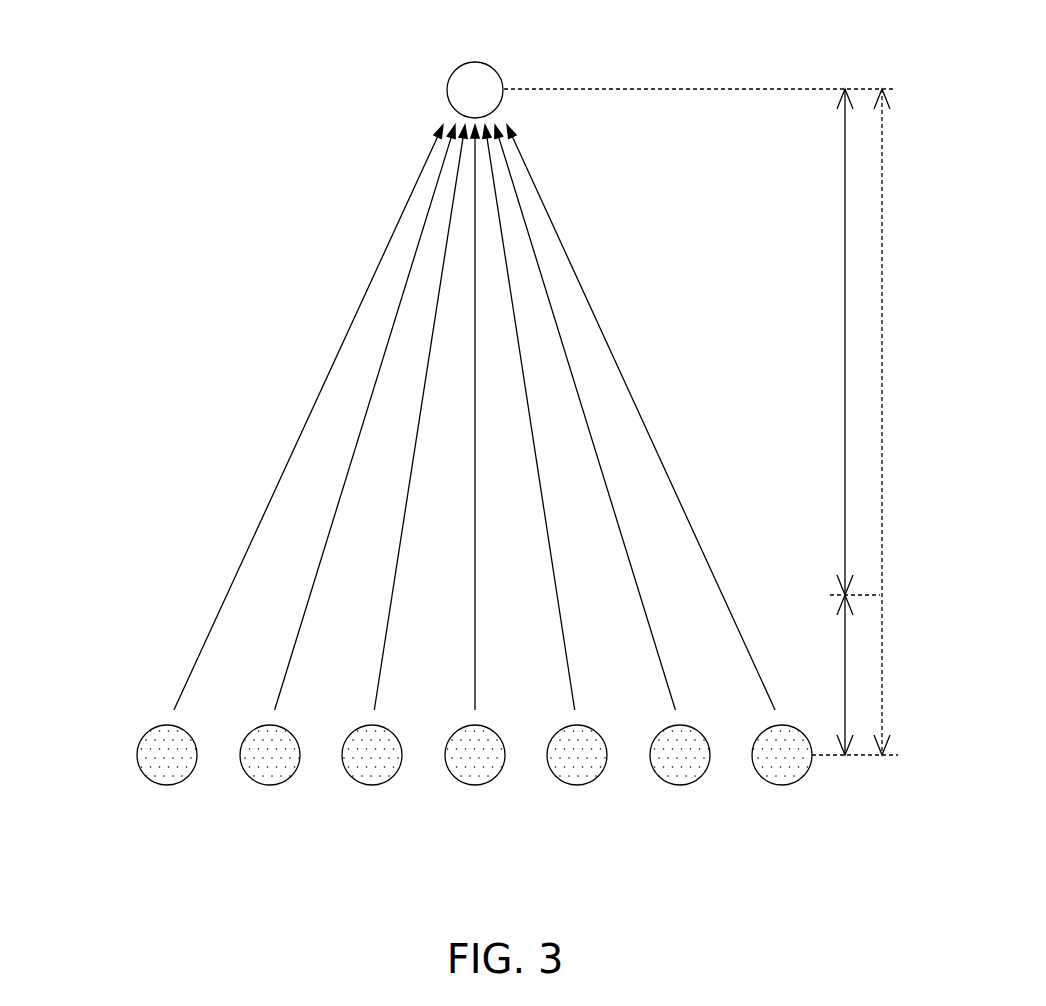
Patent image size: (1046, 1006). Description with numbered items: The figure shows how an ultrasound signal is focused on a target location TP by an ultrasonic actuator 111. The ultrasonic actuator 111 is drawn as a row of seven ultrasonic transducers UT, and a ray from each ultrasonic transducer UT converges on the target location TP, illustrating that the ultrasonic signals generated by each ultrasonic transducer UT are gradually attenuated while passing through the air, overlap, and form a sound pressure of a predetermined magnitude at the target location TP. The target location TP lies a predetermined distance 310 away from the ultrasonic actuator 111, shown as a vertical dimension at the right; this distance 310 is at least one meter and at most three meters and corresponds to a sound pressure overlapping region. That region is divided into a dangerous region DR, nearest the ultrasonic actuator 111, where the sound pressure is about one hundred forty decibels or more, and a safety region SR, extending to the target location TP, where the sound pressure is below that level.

The target location TP is at (475, 74).
The ultrasonic transducer UT is at (167, 786).
The ultrasonic actuator 111 is at (437, 793).
The safety region SR is at (829, 342).
The dangerous region DR is at (828, 675).
The predetermined distance 310 is at (903, 422).